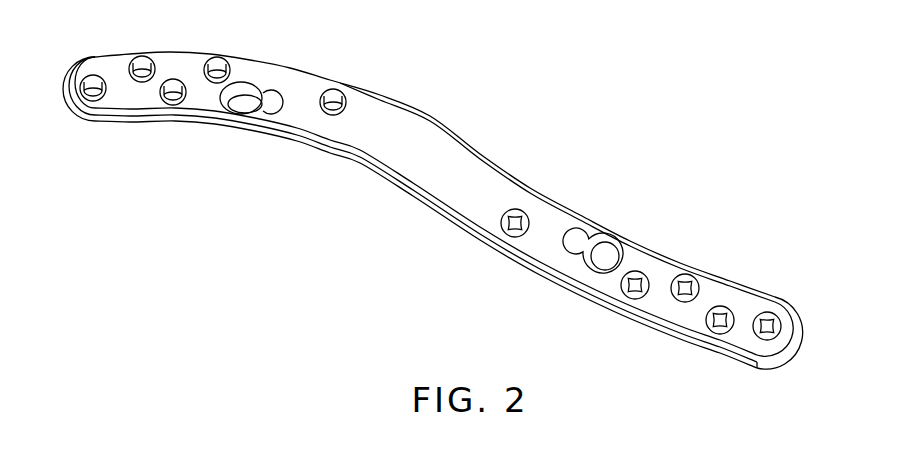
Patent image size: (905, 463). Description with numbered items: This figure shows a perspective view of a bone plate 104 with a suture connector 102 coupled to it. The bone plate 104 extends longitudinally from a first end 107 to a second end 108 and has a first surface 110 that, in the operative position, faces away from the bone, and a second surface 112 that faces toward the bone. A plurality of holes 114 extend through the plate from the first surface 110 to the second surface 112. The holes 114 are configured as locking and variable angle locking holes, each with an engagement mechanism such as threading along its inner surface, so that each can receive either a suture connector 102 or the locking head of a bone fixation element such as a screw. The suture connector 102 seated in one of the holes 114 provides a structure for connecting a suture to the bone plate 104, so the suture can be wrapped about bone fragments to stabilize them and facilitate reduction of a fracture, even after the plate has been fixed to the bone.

The suture connector 102 is at (517, 215).
The bone plate 104 is at (493, 132).
The first end 107 is at (780, 298).
The second end 108 is at (72, 123).
The first surface 110 is at (372, 112).
The second surface 112 is at (360, 167).
The holes 114 is at (632, 283).